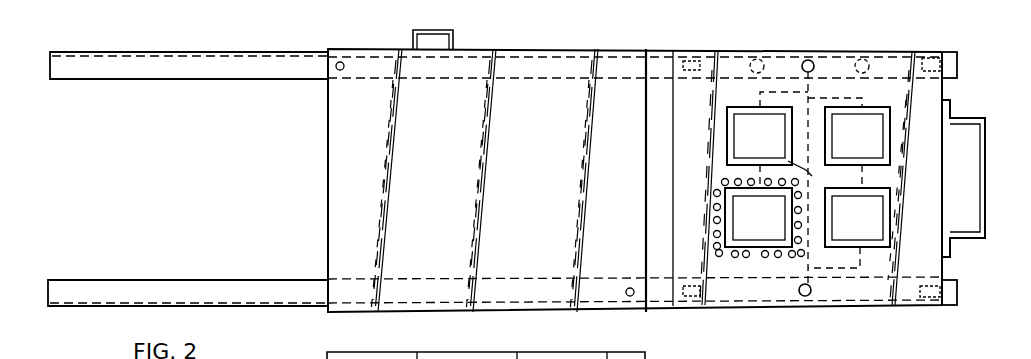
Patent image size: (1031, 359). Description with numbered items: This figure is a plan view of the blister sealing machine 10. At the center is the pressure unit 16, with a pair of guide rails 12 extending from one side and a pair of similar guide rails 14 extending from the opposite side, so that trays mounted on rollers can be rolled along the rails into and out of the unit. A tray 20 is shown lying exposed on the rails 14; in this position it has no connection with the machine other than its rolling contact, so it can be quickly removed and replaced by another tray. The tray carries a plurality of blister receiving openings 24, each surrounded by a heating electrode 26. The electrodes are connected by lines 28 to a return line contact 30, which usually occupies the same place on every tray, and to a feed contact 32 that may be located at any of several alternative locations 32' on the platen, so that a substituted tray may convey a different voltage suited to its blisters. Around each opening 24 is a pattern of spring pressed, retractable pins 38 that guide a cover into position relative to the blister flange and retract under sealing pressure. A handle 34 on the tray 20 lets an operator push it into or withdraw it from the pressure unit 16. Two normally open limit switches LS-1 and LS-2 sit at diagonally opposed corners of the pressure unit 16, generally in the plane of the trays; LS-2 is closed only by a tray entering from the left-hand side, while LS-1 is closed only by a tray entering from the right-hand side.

The machine 10 is at (318, 150).
The guide rails 12 is at (244, 80).
The guide rails 14 is at (815, 305).
The pressure unit 16 is at (445, 193).
The blister receiving tray 20 is at (735, 292).
The blister receiving openings 24 is at (769, 148).
The heating electrode 26 is at (850, 190).
The lines 28 is at (782, 92).
The return line contact 30 is at (812, 290).
The feed contact 32 is at (812, 49).
The feed contact locations 32' is at (804, 49).
The handle 34 is at (985, 163).
The spring pressed retractable pins 38 is at (713, 212).
The limit switch LS-1 is at (340, 62).
The limit switch LS-2 is at (630, 297).